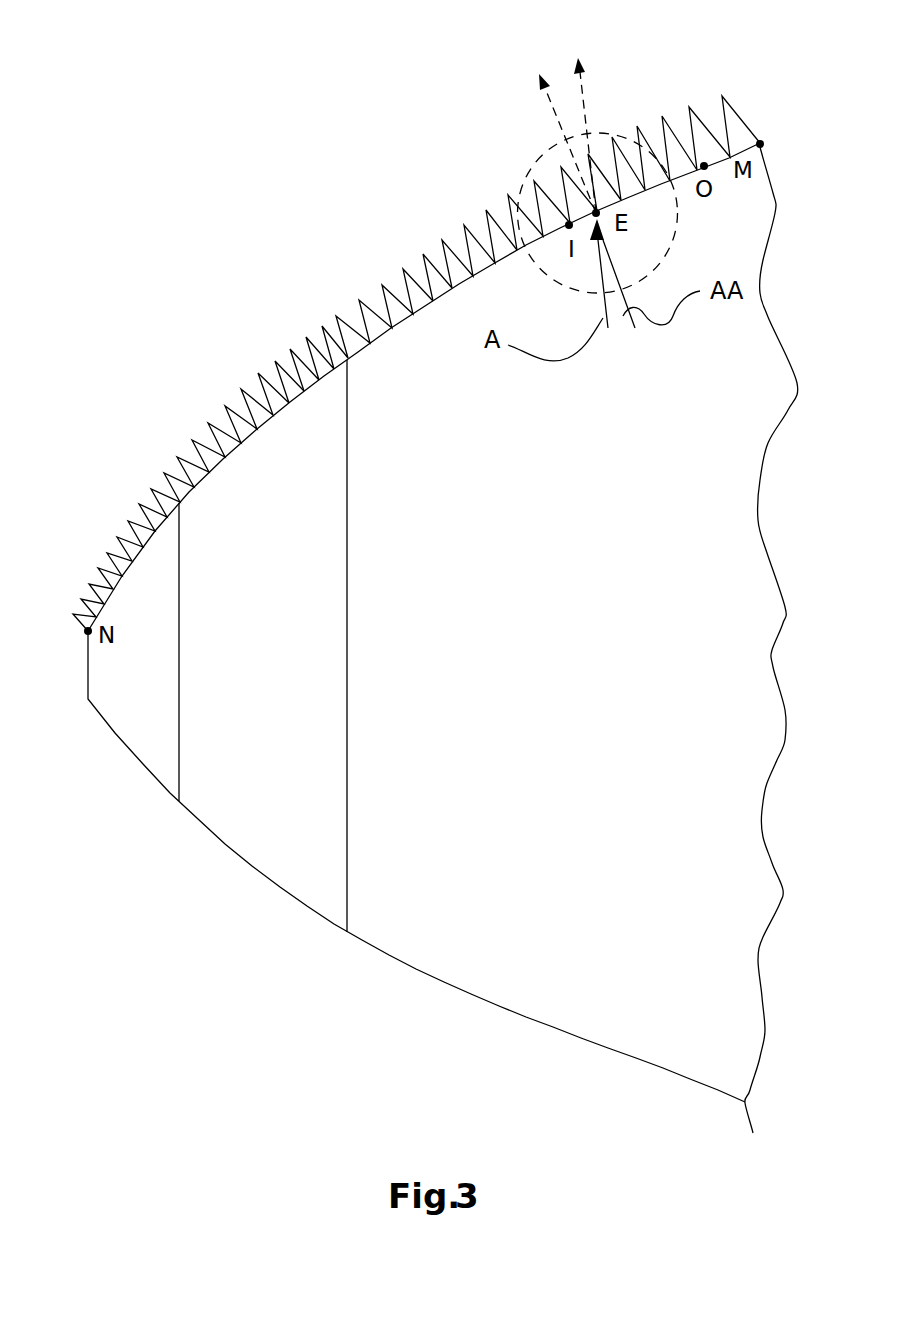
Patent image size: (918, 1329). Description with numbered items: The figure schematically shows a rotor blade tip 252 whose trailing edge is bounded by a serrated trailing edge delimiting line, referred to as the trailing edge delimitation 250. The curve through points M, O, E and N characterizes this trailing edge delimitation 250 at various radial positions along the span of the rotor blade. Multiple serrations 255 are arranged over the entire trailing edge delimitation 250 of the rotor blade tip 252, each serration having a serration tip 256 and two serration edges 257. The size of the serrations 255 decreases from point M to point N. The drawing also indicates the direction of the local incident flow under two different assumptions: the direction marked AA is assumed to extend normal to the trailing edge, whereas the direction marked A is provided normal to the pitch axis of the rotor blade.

The trailing edge delimitation 250 is at (398, 356).
The rotor blade tip 252 is at (232, 124).
The serrations 255 is at (742, 120).
The serration tip 256 is at (416, 300).
The serration edges 257 is at (476, 220).